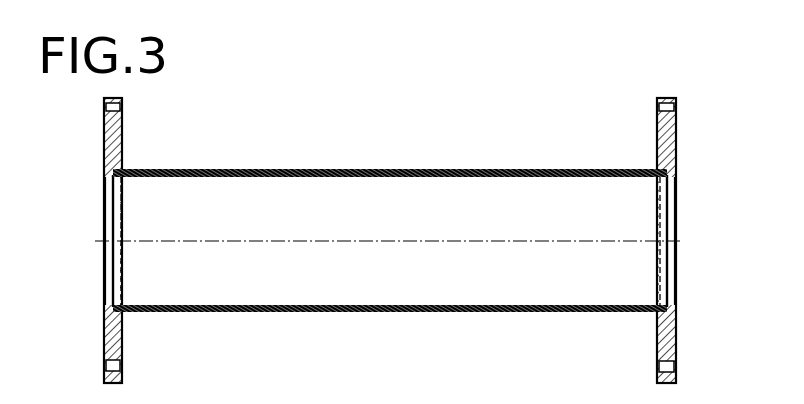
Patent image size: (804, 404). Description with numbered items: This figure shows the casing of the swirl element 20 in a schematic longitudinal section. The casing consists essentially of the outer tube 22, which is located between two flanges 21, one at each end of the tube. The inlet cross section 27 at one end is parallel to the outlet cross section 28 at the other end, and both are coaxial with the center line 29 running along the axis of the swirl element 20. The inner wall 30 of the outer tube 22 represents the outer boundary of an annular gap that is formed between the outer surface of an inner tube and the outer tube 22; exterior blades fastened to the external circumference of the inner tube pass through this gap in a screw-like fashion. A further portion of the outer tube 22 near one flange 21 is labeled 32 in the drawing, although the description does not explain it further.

The fuel tank assembly 20 is at (378, 158).
The end flange 21 is at (122, 133).
The tubular shell wall 22 is at (334, 169).
The inner flange surface 27 is at (113, 245).
The flange wall 28 is at (668, 190).
The longitudinal axis 29 is at (634, 242).
The shell inner layer 30 is at (363, 178).
The shell outer layer 32 is at (641, 170).